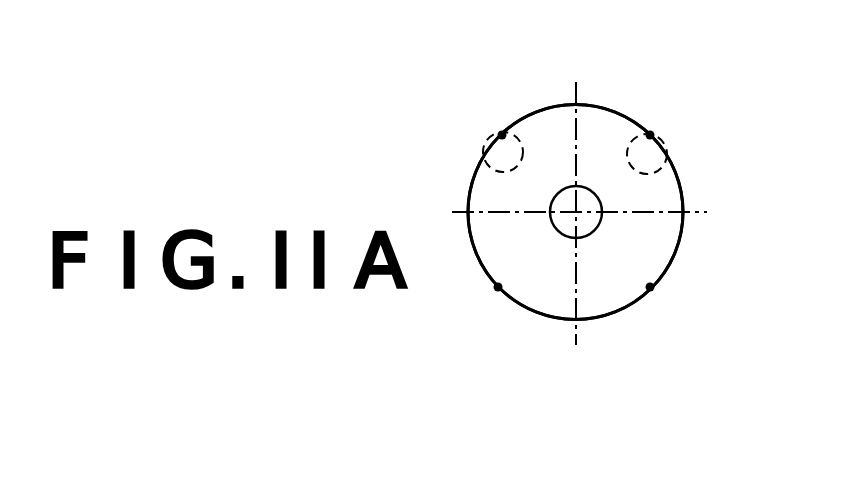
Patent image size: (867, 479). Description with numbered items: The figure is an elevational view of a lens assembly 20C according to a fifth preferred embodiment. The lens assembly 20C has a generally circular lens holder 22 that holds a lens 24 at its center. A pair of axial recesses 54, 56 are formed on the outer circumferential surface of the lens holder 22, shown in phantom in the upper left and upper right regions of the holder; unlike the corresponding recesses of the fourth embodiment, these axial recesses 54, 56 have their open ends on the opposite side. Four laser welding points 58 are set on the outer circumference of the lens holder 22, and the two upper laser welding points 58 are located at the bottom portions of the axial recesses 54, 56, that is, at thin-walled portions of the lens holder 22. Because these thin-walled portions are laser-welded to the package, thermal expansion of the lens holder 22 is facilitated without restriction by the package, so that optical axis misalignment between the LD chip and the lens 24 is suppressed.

The lens assembly 20C is at (548, 92).
The lens holder 22 is at (679, 238).
The lens 24 is at (577, 235).
The axial recess 54 is at (485, 152).
The axial recess 56 is at (667, 152).
The laser welding points 58 is at (498, 128).